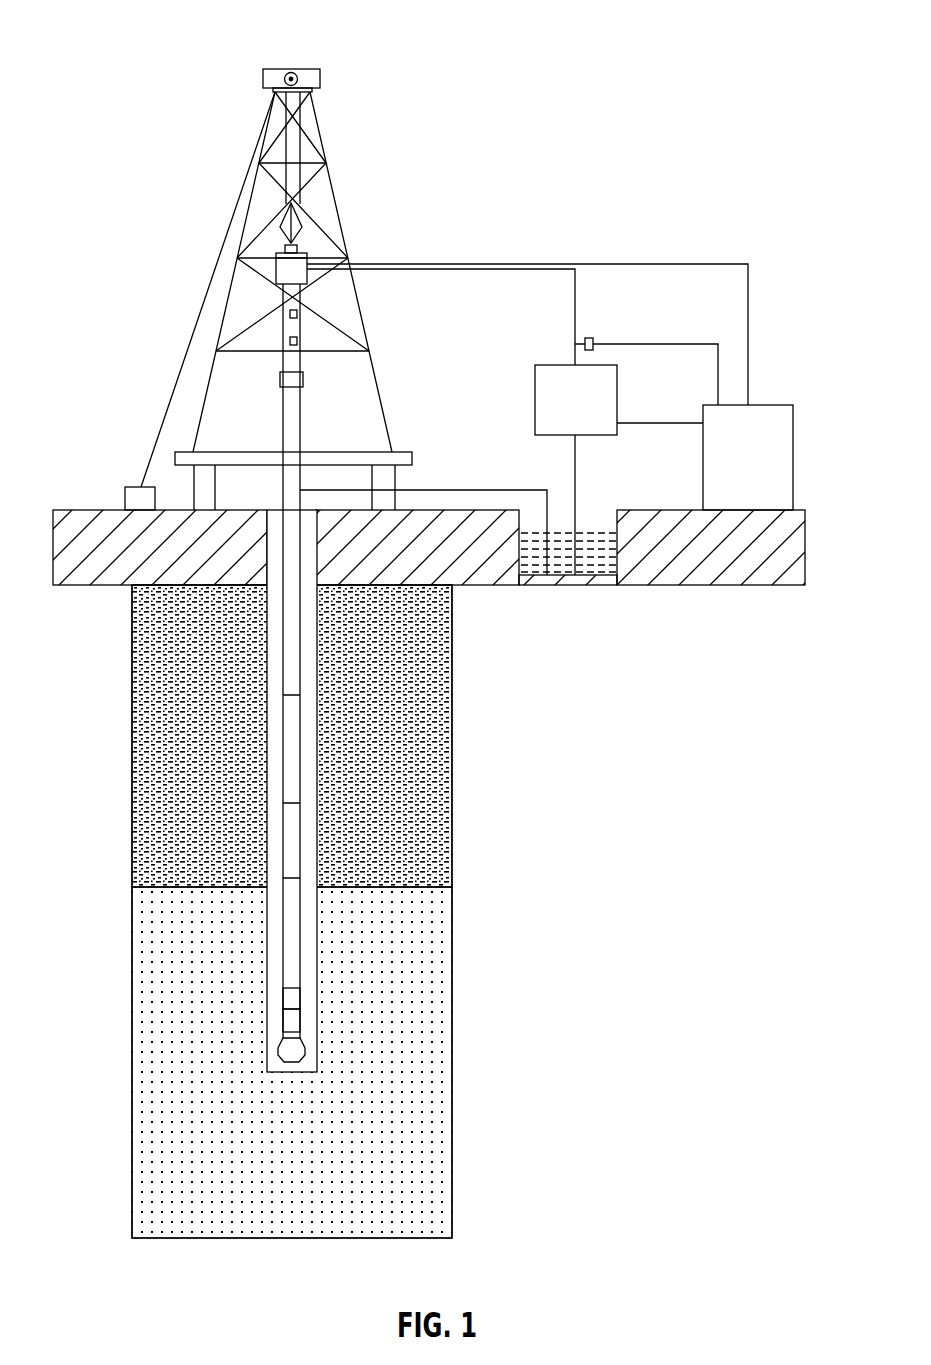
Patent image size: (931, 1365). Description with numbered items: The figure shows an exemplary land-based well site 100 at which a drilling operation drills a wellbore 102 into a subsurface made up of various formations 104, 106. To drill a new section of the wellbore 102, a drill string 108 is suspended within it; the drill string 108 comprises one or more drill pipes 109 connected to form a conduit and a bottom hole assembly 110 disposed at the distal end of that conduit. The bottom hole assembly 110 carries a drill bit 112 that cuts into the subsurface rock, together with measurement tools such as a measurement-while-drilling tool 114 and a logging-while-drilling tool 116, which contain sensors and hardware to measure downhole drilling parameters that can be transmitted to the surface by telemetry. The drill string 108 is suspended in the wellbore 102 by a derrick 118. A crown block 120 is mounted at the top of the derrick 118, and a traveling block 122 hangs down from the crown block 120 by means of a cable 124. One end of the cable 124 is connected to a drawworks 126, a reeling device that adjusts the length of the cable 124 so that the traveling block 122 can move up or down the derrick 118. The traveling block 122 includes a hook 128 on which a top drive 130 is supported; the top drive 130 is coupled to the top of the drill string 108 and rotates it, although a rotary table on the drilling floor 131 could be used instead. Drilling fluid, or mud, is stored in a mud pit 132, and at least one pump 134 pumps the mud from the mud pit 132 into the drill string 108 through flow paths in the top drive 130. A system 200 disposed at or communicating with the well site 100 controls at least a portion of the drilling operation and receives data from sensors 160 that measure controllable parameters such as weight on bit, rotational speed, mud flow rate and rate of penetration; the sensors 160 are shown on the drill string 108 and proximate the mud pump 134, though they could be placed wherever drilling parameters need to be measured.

The well site 100 is at (374, 62).
The wellbore 102 is at (307, 697).
The formation 104 is at (453, 645).
The formation 106 is at (443, 922).
The drill string 108 is at (283, 877).
The drill pipes 109 is at (292, 688).
The bottom hole assembly 110 is at (278, 1002).
The drill bit 112 is at (297, 1056).
The measurement-while-drilling tool 114 is at (297, 998).
The logging-while-drilling tool 116 is at (297, 1020).
The derrick 118 is at (333, 190).
The crown block 120 is at (291, 73).
The traveling block 122 is at (291, 226).
The cable 124 is at (296, 148).
The drawworks 126 is at (135, 486).
The hook 128 is at (285, 246).
The top drive 130 is at (276, 270).
The drilling floor 131 is at (320, 451).
The mud pit 132 is at (610, 524).
The pump 134 is at (617, 386).
The sensors 160 is at (298, 314).
The system 200 is at (777, 404).